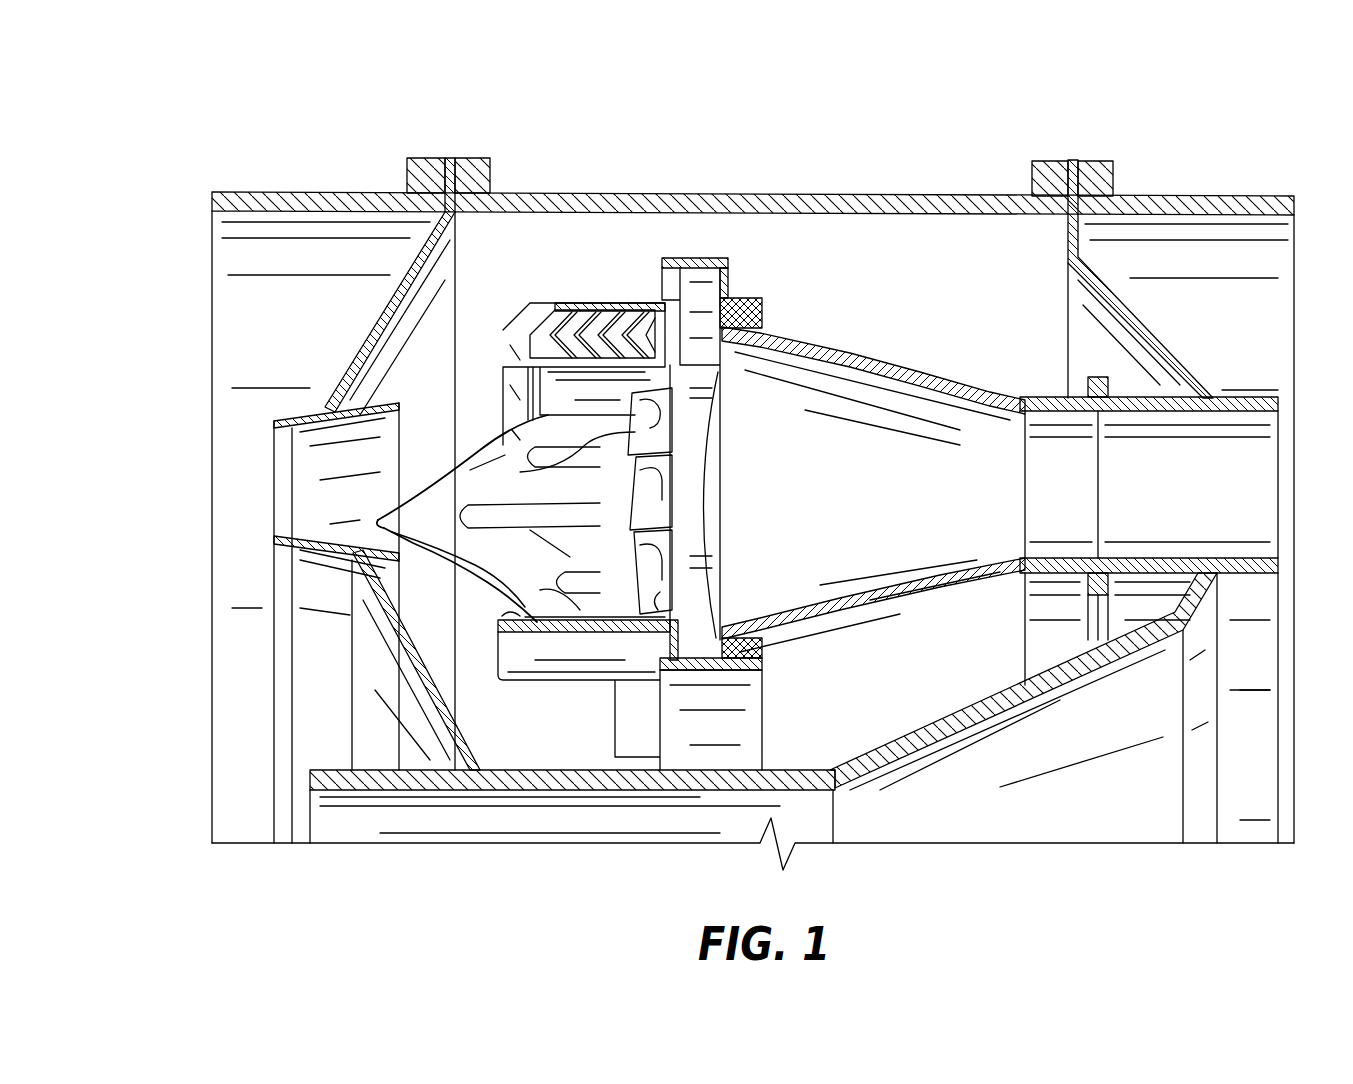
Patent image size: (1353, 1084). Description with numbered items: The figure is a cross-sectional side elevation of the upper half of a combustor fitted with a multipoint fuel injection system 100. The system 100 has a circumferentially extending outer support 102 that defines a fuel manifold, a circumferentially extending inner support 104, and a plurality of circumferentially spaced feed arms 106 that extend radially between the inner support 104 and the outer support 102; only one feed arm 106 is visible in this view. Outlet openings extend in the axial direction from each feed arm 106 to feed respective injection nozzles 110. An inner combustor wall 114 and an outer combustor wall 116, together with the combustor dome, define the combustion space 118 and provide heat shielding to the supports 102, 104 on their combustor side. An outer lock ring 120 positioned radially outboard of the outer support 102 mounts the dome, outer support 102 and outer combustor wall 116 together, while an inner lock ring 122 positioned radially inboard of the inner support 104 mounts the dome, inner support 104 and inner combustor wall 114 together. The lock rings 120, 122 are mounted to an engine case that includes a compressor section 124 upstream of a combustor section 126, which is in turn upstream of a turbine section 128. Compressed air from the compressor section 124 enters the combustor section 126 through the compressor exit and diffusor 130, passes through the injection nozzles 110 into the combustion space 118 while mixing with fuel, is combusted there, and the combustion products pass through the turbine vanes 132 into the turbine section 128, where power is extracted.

The multipoint fuel injection system 100 is at (335, 82).
The outer support 102 is at (550, 303).
The inner support 104 is at (488, 622).
The feed arm 106 is at (546, 573).
The injection nozzle 110 is at (656, 400).
The inner combustor wall 114 is at (900, 600).
The outer combustor wall 116 is at (925, 358).
The combustion space 118 is at (888, 511).
The outer lock ring 120 is at (680, 256).
The inner lock ring 122 is at (203, 664).
The compressor section 124 is at (408, 160).
The combustor section 126 is at (455, 157).
The turbine section 128 is at (1100, 162).
The compressor exit and diffusor 130 is at (268, 460).
The turbine vanes 132 is at (1211, 501).